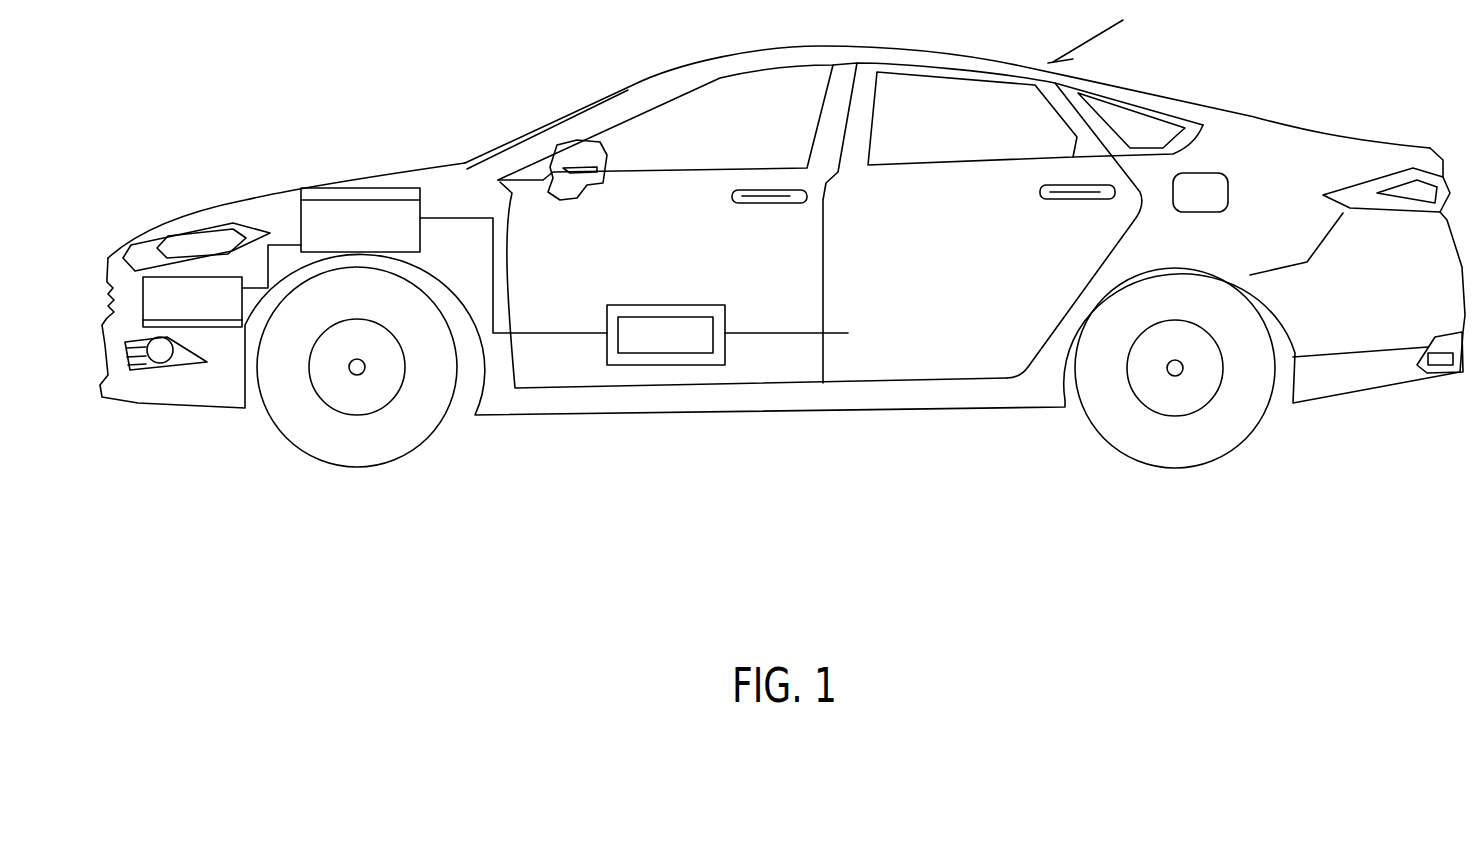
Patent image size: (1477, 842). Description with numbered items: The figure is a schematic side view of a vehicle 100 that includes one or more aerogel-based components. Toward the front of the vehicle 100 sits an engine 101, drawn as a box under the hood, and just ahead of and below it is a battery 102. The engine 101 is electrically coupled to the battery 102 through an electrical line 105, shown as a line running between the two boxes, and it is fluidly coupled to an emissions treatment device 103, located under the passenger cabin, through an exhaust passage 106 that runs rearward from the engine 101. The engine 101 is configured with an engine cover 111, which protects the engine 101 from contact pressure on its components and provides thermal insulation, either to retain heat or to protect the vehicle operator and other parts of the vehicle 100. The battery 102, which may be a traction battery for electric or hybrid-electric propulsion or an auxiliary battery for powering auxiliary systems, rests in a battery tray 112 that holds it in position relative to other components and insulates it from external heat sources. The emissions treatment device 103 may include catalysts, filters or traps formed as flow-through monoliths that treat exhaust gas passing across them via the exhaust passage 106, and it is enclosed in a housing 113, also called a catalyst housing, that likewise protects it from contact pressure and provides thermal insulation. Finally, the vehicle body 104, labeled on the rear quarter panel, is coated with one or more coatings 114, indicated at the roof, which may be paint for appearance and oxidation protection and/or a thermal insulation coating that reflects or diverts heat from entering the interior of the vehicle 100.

The vehicle 100 is at (1100, 533).
The engine 101 is at (376, 235).
The battery 102 is at (208, 308).
The emissions treatment device 103 is at (681, 345).
The vehicle body 104 is at (1292, 206).
The electrical line 105 is at (293, 242).
The exhaust passage 106 is at (447, 217).
The engine cover 111 is at (310, 196).
The battery tray 112 is at (230, 325).
The housing 113 is at (720, 310).
The coatings 114 is at (1250, 117).